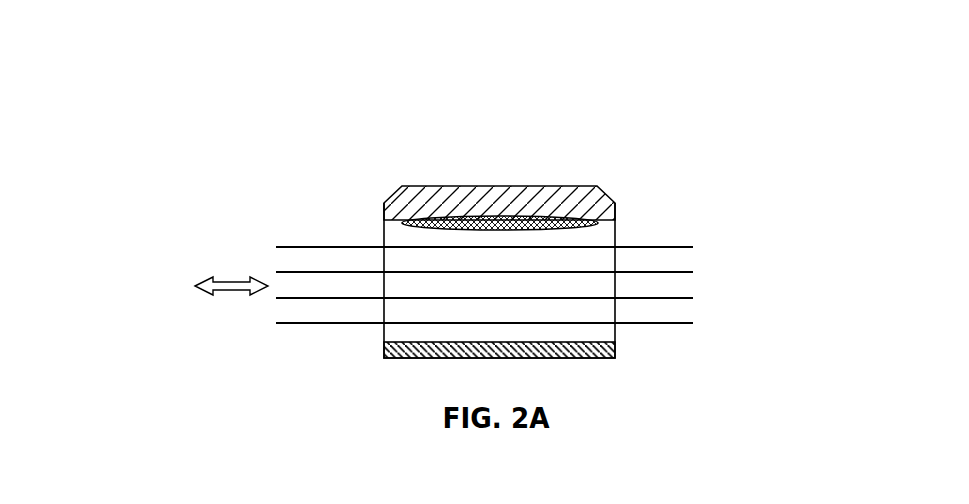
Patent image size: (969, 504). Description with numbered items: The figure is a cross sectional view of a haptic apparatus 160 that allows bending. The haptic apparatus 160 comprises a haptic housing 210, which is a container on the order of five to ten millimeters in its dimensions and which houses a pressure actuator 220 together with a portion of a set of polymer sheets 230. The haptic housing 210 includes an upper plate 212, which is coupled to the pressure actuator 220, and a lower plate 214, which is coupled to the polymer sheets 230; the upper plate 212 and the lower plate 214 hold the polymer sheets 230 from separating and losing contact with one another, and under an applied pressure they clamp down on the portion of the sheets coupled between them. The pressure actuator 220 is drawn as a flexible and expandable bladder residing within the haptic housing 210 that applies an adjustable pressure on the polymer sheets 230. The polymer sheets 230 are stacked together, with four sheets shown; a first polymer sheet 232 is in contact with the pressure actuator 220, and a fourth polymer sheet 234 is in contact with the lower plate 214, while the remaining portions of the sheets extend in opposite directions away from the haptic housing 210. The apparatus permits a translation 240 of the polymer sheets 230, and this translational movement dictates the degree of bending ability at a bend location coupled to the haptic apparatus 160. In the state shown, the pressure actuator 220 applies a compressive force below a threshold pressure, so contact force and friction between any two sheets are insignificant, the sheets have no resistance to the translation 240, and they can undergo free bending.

The haptic apparatus 160 is at (36, 28).
The haptic housing 210 is at (634, 255).
The upper plate 212 is at (615, 203).
The lower plate 214 is at (614, 391).
The pressure actuator 220 is at (385, 218).
The polymer sheets 230 is at (354, 322).
The first polymer sheet 232 is at (297, 247).
The fourth polymer sheet 234 is at (293, 327).
The translation 240 is at (262, 294).